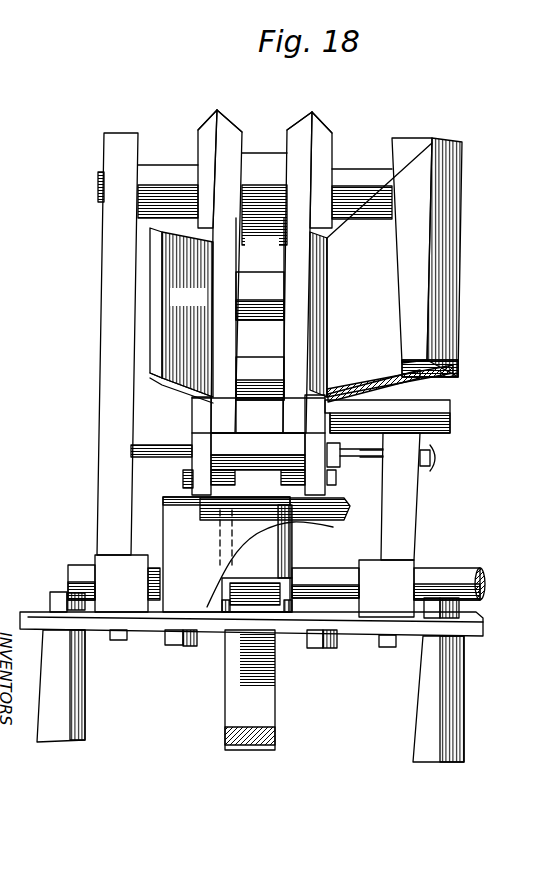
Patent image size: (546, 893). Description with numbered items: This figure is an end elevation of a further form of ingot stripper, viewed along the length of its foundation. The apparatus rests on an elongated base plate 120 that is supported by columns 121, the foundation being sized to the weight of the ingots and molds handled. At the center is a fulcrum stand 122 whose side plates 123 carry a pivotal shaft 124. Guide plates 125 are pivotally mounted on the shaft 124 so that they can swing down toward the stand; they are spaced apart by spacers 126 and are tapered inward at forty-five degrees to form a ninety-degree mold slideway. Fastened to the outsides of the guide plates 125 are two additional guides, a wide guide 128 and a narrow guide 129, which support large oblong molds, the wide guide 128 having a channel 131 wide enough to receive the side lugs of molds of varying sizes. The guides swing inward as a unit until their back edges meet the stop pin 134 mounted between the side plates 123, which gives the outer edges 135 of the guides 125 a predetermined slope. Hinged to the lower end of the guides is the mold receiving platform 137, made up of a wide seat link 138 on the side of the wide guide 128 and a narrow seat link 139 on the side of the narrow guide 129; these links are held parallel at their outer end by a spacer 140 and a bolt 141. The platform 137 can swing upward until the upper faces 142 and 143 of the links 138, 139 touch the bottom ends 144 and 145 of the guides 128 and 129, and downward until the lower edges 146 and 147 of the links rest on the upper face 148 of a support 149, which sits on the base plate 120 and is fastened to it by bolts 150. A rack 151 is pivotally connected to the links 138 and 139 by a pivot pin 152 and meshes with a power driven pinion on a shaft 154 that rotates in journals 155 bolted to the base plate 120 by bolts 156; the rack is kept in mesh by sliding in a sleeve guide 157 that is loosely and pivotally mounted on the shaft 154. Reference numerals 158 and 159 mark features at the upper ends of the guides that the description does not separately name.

The base plate 120 is at (470, 636).
The columns 121 is at (73, 714).
The fulcrum stand 122 is at (143, 128).
The side plates 123 is at (420, 493).
The pivotal shaft 124 is at (159, 172).
The guide plates 125 is at (285, 258).
The spacers 126 is at (260, 336).
The wide guide 128 is at (452, 204).
The narrow guide 129 is at (181, 312).
The channel 131 is at (377, 296).
The stop pin 134 is at (430, 457).
The outer edges 135 is at (300, 125).
The mold receiving platform 137 is at (310, 418).
The wide seat link 138 is at (436, 406).
The narrow seat link 139 is at (192, 418).
The spacer 140 is at (258, 459).
The bolt 141 is at (340, 467).
The upper face 142 is at (432, 396).
The upper face 143 is at (183, 392).
The bottom end 144 is at (450, 374).
The bottom end 145 is at (187, 383).
The lower edge 146 is at (328, 521).
The lower edge 147 is at (192, 488).
The upper face 148 is at (172, 493).
The support 149 is at (195, 548).
The bolts 150 is at (173, 638).
The rack 151 is at (272, 712).
The pivot pin 152 is at (336, 485).
The shaft 154 is at (454, 576).
The journals 155 is at (413, 577).
The bolts 156 is at (113, 640).
The sleeve guide 157 is at (294, 567).
The post shoulder 158 is at (197, 140).
The post peak 159 is at (203, 128).